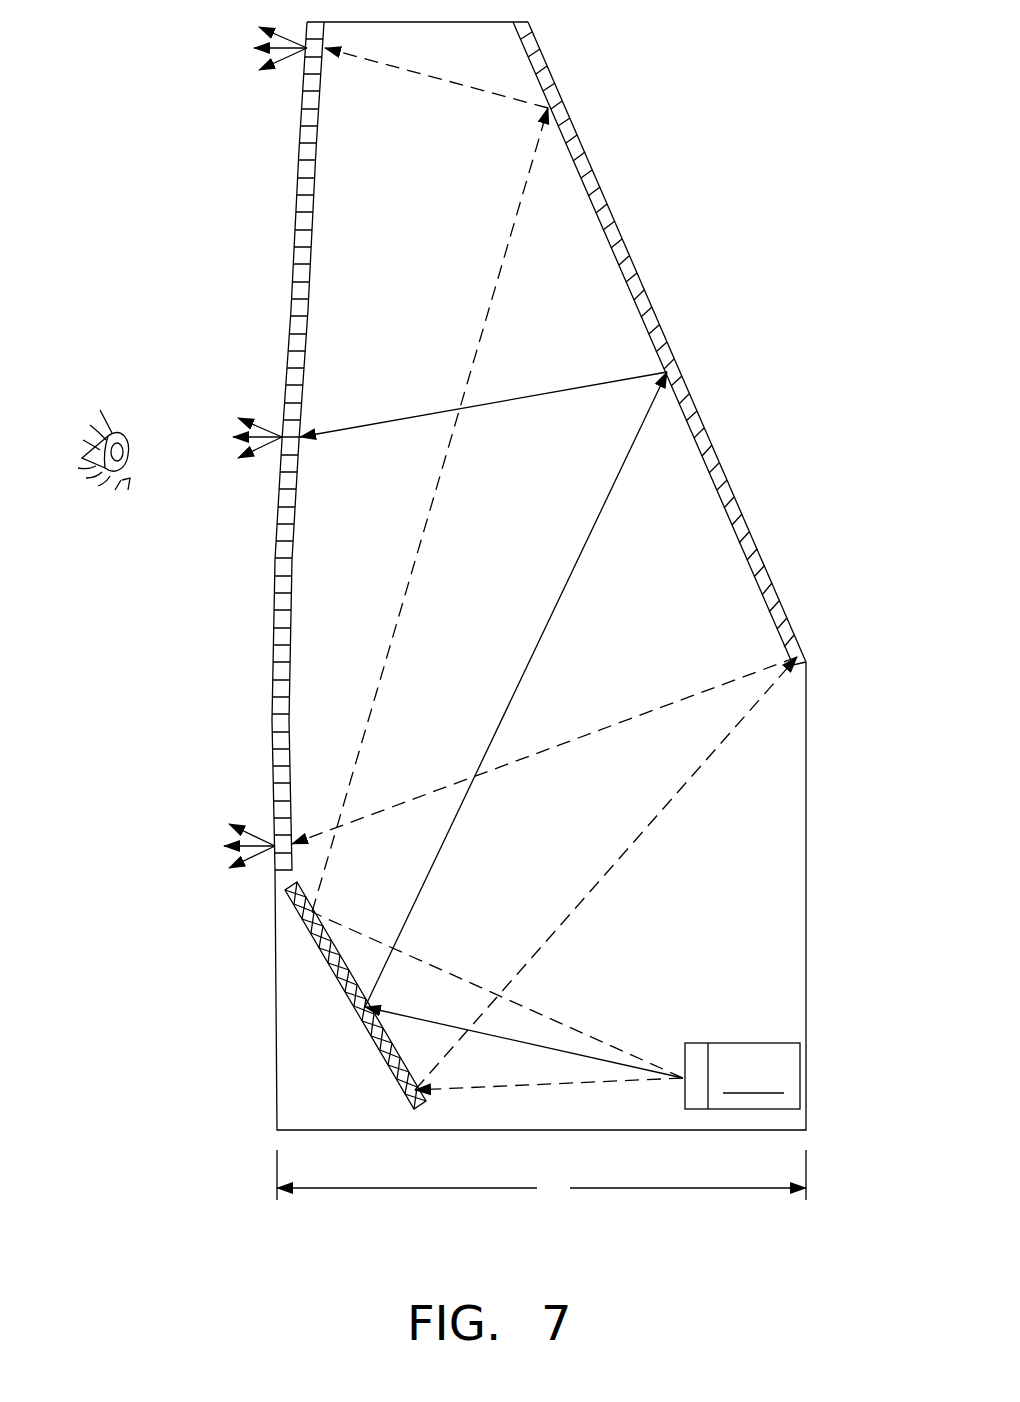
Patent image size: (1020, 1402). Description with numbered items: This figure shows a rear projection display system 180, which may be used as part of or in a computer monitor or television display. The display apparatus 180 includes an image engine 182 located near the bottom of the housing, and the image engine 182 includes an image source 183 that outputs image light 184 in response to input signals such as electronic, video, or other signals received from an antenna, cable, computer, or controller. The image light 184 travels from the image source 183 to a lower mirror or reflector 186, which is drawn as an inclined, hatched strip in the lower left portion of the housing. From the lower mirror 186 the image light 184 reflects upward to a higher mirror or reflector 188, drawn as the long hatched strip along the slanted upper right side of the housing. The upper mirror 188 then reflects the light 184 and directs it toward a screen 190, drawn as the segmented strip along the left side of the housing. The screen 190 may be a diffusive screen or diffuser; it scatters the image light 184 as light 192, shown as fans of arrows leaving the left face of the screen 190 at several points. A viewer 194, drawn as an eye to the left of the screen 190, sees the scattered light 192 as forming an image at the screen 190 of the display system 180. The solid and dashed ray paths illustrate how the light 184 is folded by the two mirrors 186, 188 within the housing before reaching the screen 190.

The rear projection display system 180 is at (752, 230).
The image engine 182 is at (742, 1076).
The image source 183 is at (697, 1043).
The image light 184 is at (478, 470).
The lower mirror 186 is at (392, 1065).
The upper mirror 188 is at (762, 594).
The screen 190 is at (294, 262).
The scattered light 192 is at (292, 57).
The viewer 194 is at (120, 428).